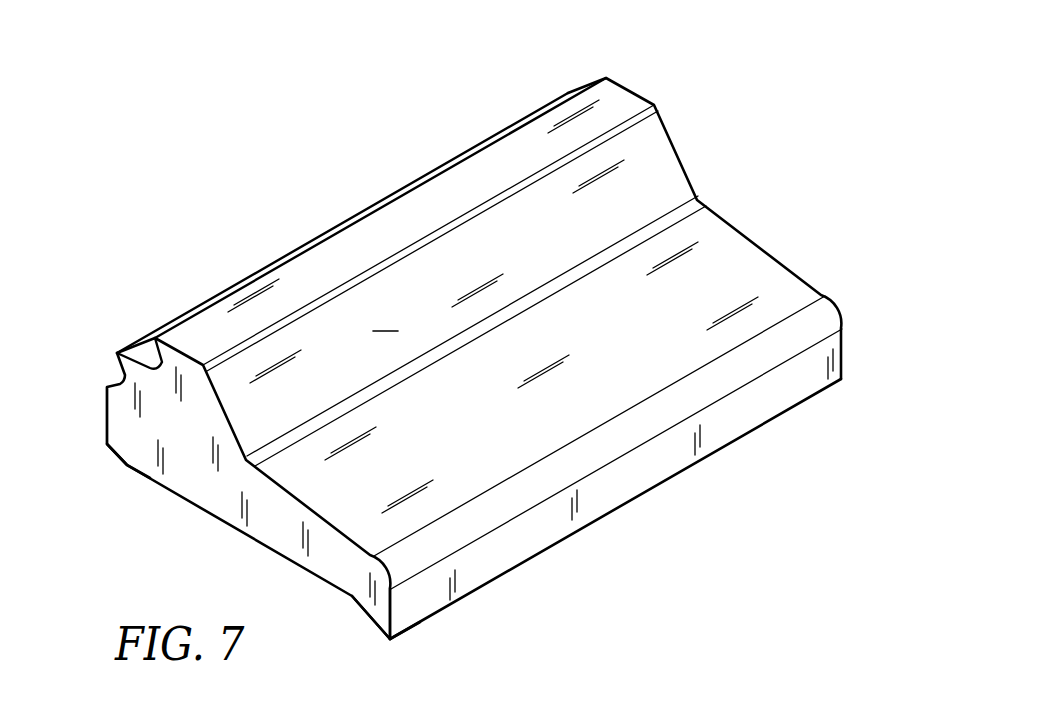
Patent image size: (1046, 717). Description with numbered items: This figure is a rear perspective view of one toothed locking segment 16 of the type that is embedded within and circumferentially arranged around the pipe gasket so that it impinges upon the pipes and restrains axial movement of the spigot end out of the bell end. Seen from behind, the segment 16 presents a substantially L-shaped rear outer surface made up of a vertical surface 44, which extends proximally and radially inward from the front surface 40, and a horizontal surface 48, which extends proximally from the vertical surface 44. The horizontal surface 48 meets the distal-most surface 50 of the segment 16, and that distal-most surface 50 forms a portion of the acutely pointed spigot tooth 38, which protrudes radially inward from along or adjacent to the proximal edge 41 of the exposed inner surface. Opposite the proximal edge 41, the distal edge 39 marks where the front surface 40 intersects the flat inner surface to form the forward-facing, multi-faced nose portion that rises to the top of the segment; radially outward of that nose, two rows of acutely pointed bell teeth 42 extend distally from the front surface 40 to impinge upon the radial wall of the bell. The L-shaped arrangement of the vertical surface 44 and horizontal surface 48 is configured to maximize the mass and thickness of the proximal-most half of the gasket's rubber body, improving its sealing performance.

The locking segment 16 is at (150, 242).
The spigot tooth 38 is at (375, 627).
The distal edge 39 is at (127, 467).
The front surface 40 is at (433, 197).
The proximal edge 41 is at (390, 641).
The bell teeth 42 is at (143, 341).
The vertical surface 44 is at (688, 166).
The horizontal surface 48 is at (485, 428).
The distal-most surface 50 is at (630, 482).